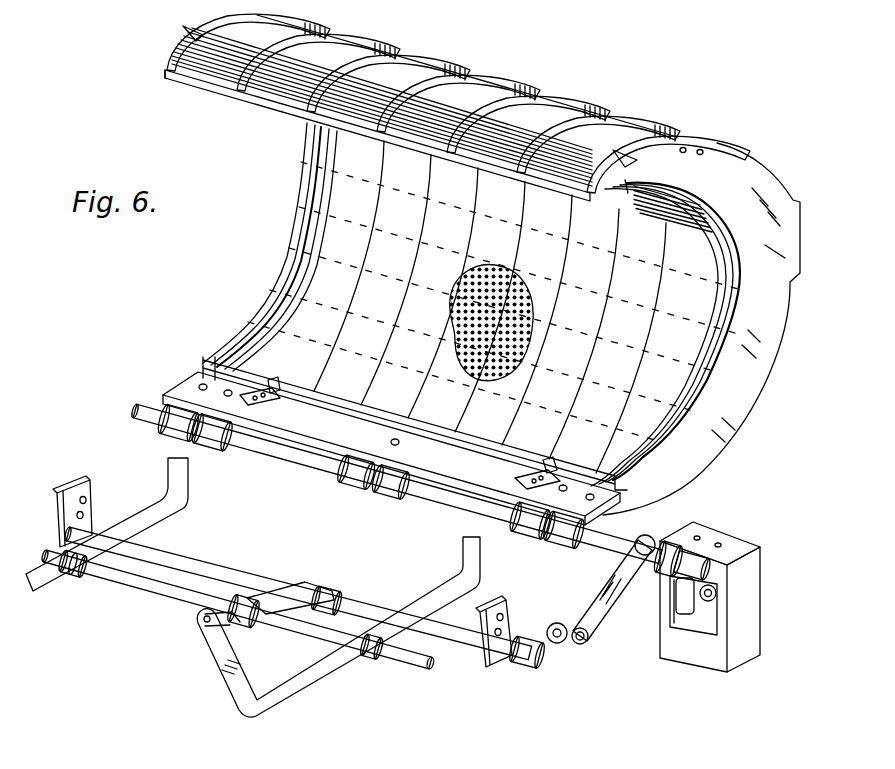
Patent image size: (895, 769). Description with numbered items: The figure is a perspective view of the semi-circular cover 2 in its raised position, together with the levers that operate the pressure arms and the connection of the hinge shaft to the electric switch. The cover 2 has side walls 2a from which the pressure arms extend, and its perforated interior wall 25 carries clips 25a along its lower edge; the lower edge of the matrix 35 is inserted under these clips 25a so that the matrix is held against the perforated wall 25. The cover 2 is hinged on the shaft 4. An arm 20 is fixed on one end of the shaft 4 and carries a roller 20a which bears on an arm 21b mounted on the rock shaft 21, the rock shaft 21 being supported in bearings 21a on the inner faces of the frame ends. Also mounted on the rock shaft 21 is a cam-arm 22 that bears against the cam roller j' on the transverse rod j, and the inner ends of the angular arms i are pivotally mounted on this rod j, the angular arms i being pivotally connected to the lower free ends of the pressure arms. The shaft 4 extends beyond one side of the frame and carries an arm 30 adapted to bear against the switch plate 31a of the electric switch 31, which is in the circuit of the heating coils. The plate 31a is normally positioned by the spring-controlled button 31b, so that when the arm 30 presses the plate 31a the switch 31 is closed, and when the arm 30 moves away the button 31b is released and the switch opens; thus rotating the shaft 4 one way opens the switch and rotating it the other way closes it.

The cover 2 is at (193, 83).
The side walls 2a is at (297, 250).
The matrix 35 is at (325, 506).
The perforated interior wall 25 is at (450, 320).
The clips 25a is at (277, 395).
The shaft 4 is at (410, 487).
The rock shaft 21 is at (247, 577).
The bearings 21a is at (63, 493).
The roller 20a is at (540, 630).
The arm 21b is at (560, 650).
The arm 20 is at (593, 593).
The transverse rod j is at (238, 610).
The cam-arm 22 is at (257, 627).
The cam rollers j' is at (290, 584).
The angular arms i is at (143, 513).
The electric switch 31 is at (703, 653).
The switch plate 31a is at (695, 624).
The arm 30 is at (680, 597).
The spring-controlled button 31b is at (716, 593).